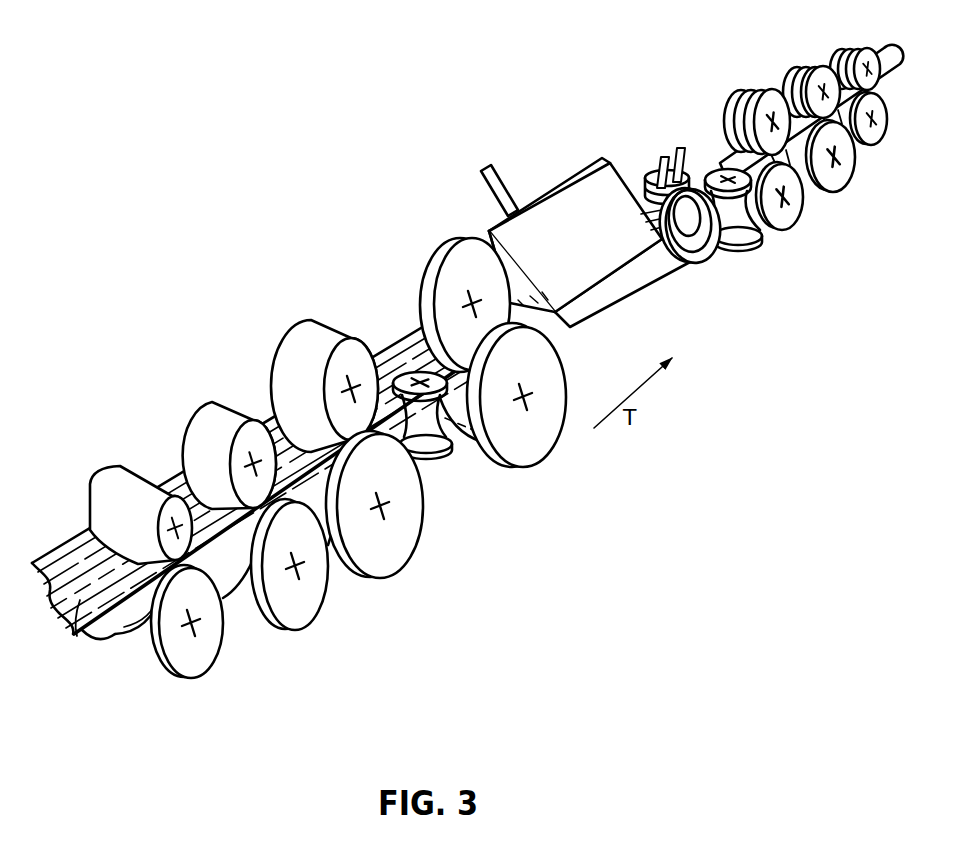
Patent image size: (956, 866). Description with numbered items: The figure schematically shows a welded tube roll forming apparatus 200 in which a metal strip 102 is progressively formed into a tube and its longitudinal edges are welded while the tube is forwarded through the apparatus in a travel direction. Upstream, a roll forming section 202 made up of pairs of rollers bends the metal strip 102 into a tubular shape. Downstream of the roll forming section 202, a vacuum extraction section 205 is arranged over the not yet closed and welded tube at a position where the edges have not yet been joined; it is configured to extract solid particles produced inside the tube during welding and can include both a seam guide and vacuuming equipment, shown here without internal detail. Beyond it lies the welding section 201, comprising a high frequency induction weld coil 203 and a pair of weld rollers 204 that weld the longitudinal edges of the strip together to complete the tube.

The metal strip 102 is at (82, 633).
The welded tube roll forming apparatus 200 is at (496, 361).
The welding section 201 is at (749, 198).
The roll forming section 202 is at (218, 363).
The high frequency induction weld coil 203 is at (697, 253).
The weld rollers 204 is at (740, 232).
The vacuum extraction section 205 is at (478, 199).